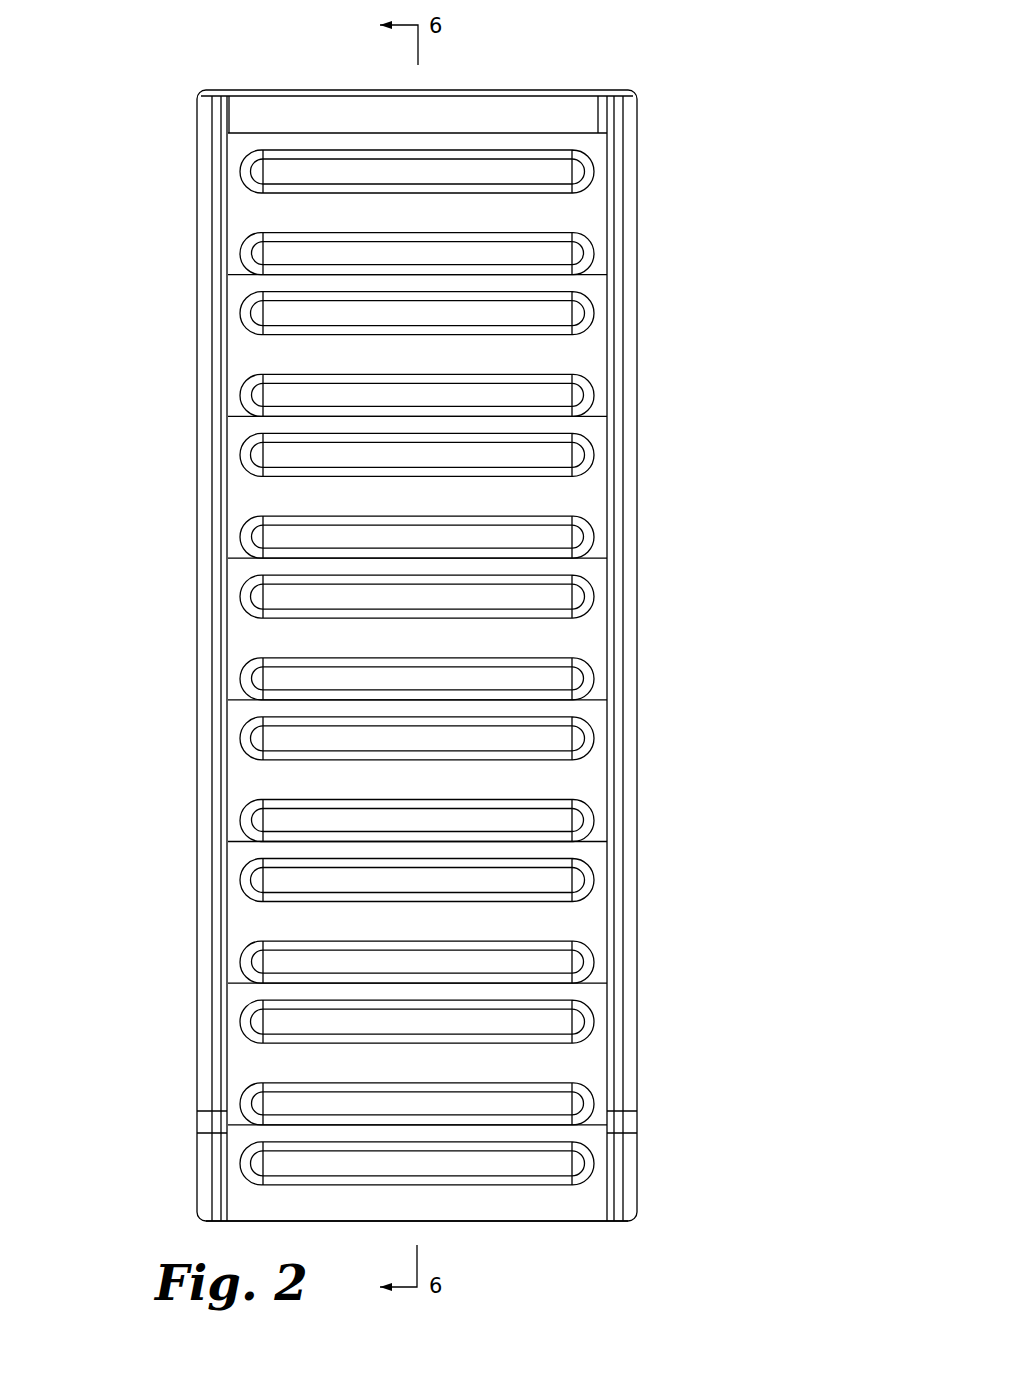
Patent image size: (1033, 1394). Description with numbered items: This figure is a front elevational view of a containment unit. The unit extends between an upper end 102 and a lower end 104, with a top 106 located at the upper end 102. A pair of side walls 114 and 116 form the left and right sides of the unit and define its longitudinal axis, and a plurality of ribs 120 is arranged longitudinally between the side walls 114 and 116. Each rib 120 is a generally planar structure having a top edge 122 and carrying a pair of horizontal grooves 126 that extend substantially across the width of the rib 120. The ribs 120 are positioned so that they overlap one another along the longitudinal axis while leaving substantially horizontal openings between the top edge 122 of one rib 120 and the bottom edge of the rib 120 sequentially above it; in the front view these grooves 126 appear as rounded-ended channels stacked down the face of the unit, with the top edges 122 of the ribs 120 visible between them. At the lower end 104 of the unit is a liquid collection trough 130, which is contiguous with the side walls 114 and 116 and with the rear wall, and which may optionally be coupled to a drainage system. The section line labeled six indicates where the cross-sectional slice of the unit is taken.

The upper end 102 is at (626, 58).
The lower end 104 is at (561, 1250).
The top 106 is at (490, 88).
The side wall 114 is at (638, 583).
The side wall 116 is at (200, 620).
The ribs 120 is at (262, 218).
The top edge 122 is at (553, 414).
The horizontal grooves 126 is at (567, 172).
The liquid collection trough 130 is at (225, 1115).